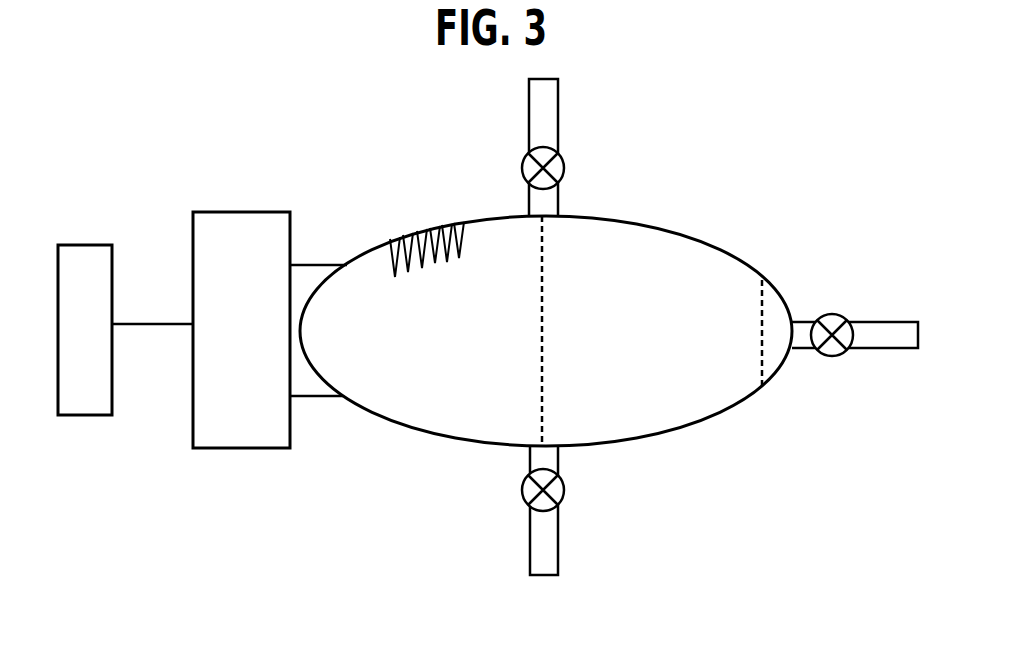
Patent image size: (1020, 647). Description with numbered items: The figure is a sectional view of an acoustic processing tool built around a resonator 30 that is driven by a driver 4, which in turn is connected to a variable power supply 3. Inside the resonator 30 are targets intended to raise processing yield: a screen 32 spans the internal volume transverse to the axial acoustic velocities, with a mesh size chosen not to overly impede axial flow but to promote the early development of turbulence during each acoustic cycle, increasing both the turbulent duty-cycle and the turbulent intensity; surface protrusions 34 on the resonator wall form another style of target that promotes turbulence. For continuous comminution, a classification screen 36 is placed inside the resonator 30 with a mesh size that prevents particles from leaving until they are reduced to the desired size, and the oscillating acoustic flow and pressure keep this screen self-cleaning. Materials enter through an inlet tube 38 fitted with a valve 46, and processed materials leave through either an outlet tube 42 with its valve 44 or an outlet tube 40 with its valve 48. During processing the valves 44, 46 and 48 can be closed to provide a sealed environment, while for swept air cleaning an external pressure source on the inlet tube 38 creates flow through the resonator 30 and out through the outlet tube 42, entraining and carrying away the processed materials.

The variable power supply 3 is at (83, 245).
The driver 4 is at (240, 212).
The resonator 30 is at (605, 449).
The screen 32 is at (541, 368).
The surface protrusions 34 is at (413, 237).
The classification screen 36 is at (760, 303).
The inlet tube 38 is at (529, 196).
The outlet tube 40 is at (799, 351).
The outlet tube 42 is at (531, 457).
The valve 44 is at (524, 498).
The valve 46 is at (565, 168).
The valve 48 is at (830, 314).